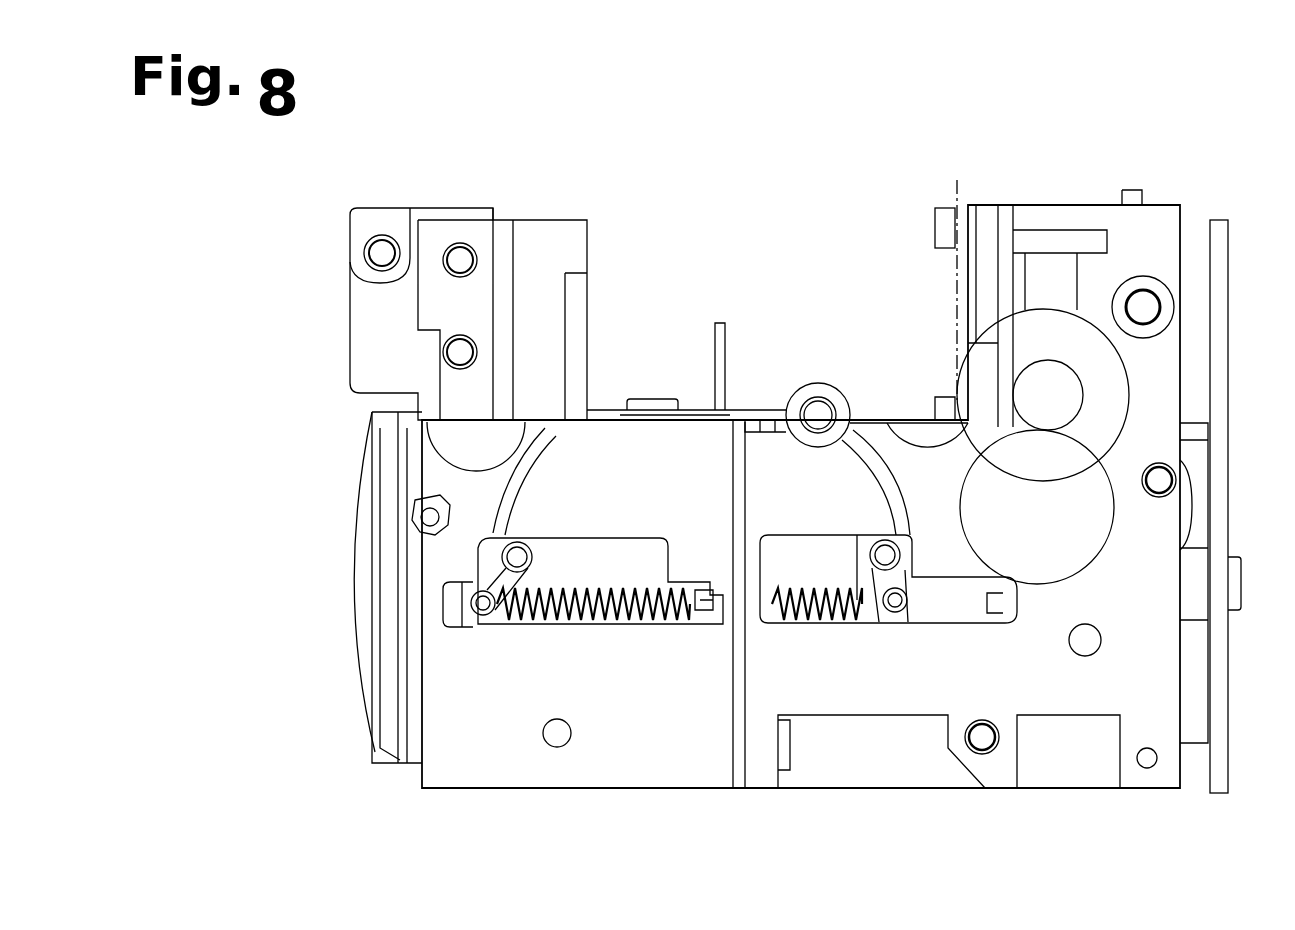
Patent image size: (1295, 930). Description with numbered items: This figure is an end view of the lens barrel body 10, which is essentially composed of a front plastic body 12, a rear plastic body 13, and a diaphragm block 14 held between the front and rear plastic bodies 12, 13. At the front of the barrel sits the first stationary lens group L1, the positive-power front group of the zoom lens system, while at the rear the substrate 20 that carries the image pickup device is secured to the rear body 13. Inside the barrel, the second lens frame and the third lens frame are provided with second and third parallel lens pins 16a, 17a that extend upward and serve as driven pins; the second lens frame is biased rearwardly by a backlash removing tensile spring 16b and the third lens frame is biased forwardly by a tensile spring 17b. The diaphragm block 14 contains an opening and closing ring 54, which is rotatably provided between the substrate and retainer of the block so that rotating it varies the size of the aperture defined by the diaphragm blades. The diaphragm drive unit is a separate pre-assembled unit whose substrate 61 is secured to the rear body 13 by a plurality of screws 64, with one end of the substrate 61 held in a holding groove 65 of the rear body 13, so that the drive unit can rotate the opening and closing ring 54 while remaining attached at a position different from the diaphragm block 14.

The lens barrel body 10 is at (1172, 134).
The front plastic body 12 is at (582, 770).
The rear plastic body 13 is at (1072, 698).
The diaphragm block 14 is at (740, 778).
The second lens pin 16a is at (517, 545).
The backlash removing tensile spring 16b is at (583, 622).
The third lens pin 17a is at (883, 548).
The tensile spring 17b is at (818, 622).
The substrate 20 is at (1220, 466).
The opening and closing ring 54 is at (703, 325).
The substrate of the diaphragm drive unit 61 is at (963, 205).
The screws 64 is at (935, 228).
The holding groove 65 is at (955, 405).
The first stationary lens group L1 is at (352, 640).